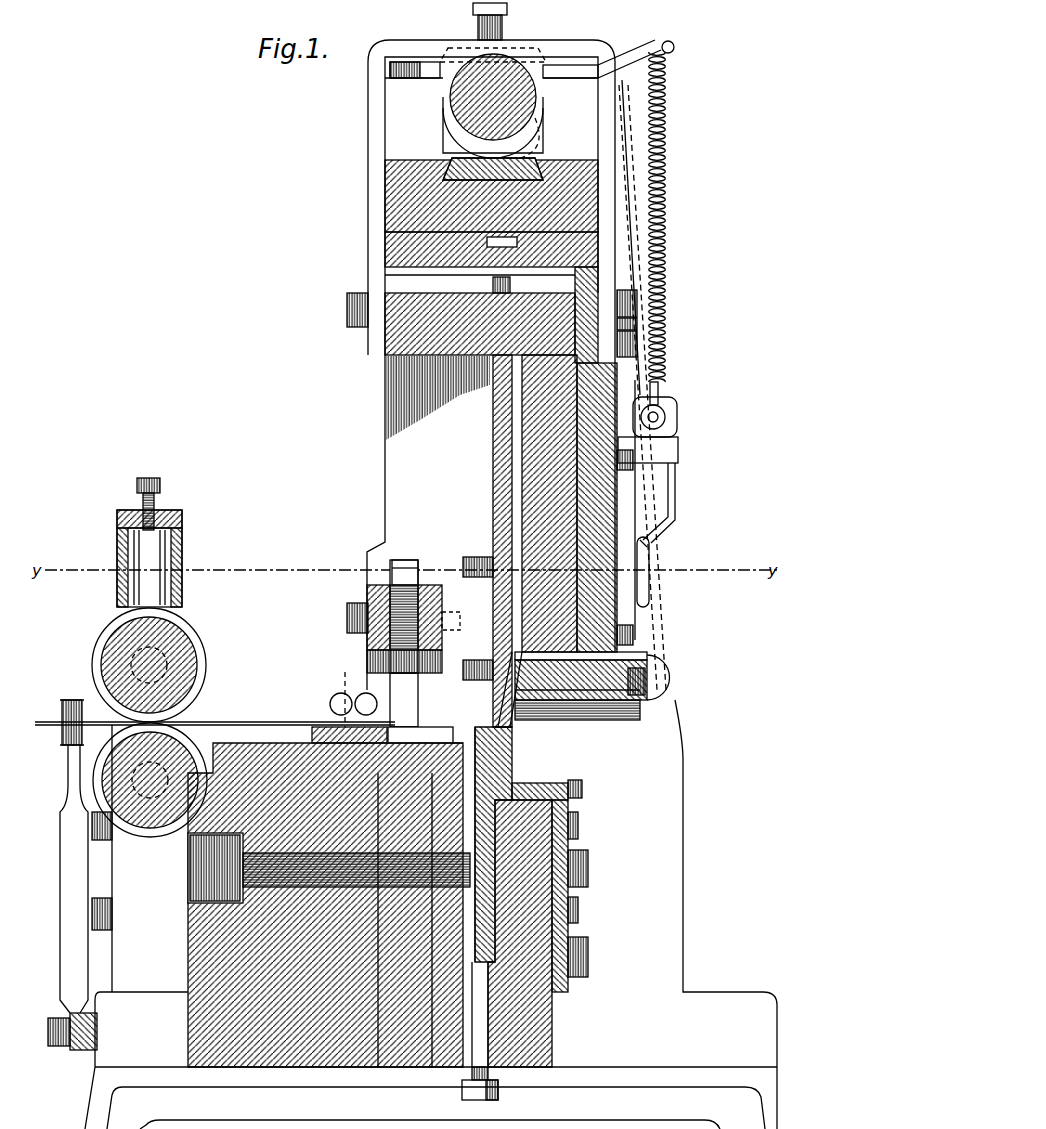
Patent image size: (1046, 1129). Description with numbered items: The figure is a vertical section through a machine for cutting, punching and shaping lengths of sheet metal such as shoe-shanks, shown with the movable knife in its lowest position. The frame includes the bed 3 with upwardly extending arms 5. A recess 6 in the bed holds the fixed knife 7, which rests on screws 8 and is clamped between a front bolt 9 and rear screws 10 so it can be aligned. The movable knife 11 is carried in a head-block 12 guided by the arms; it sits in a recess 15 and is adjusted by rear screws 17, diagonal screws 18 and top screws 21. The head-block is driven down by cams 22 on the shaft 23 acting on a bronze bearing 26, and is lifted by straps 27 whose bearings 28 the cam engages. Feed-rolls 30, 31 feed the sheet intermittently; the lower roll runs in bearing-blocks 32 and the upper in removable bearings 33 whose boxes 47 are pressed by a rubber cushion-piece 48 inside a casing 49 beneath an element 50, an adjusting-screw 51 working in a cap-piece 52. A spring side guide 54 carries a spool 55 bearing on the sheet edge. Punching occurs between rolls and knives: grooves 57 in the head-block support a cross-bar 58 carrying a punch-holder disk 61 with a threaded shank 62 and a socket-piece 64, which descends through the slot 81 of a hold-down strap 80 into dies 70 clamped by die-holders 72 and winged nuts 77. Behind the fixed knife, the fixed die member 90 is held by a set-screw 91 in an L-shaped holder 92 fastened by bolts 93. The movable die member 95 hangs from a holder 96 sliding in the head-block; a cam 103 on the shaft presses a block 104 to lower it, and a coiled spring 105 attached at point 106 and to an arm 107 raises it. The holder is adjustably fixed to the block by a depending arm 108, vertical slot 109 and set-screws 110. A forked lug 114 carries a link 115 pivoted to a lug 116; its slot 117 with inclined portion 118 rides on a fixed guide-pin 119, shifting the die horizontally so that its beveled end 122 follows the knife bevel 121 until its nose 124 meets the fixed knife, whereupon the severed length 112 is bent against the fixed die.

The bed 3 is at (431, 914).
The arms 5 is at (374, 859).
The recess 6 is at (470, 813).
The bed or fixed knife 7 is at (487, 770).
The screws 8 is at (468, 1087).
The bolt 9 is at (329, 877).
The screws 10 is at (583, 820).
The movable knife 11 is at (497, 430).
The head-block 12 is at (383, 345).
The recess 15 is at (433, 383).
The adjusting-screws 17 is at (620, 460).
The adjusting-screws 18 is at (477, 559).
The adjusting-screws 21 is at (490, 268).
The cams 22 is at (450, 127).
The shaft 23 is at (503, 63).
The bearing 26 is at (497, 157).
The straps 27 is at (373, 190).
The bearings 28 is at (458, 58).
The feed-roll 30 is at (100, 652).
The feed-roll 31 is at (97, 768).
The bearing-blocks 32 is at (130, 932).
The removable bearings 33 is at (203, 647).
The boxes 47 is at (188, 627).
The elastic cushion-piece 48 is at (167, 560).
The casings or housings 49 is at (120, 560).
The cylinder cap 50 is at (137, 508).
The adjusting-screw 51 is at (157, 500).
The cap-piece 52 is at (182, 518).
The side guide 54 is at (68, 863).
The spools 55 is at (63, 713).
The grooves or recesses 57 is at (392, 568).
The cross-bar 58 is at (367, 598).
The disk 61 is at (370, 648).
The screw-threaded shank 62 is at (440, 602).
The socket-piece 64 is at (402, 682).
The dies 70 is at (293, 728).
The die-holders 72 is at (322, 702).
The winged nuts 77 is at (330, 695).
The strap 80 is at (437, 713).
The central longitudinal slot 81 is at (425, 710).
The fixed die member 90 is at (513, 757).
The set-screw 91 is at (573, 787).
The L-shaped holder 92 is at (573, 800).
The bolts 93 is at (588, 953).
The movable die member 95 is at (625, 656).
The holder 96 is at (620, 503).
The cam 103 is at (530, 133).
The block 104 is at (557, 182).
The coiled spring 105 is at (668, 205).
The attachment point 106 is at (660, 412).
The arm 107 is at (618, 58).
The depending arm 108 is at (615, 300).
The vertical slot 109 is at (633, 323).
The set-screws 110 is at (642, 337).
The severed length of material 112 is at (512, 733).
The forked lug 114 is at (665, 430).
The link 115 is at (662, 447).
The lug 116 is at (683, 690).
The slot 117 is at (667, 510).
The inclined portion 118 is at (648, 540).
The fixed guide-pin 119 is at (647, 548).
The bevel 121 is at (456, 722).
The bevel 122 is at (553, 713).
The nose 124 is at (545, 738).